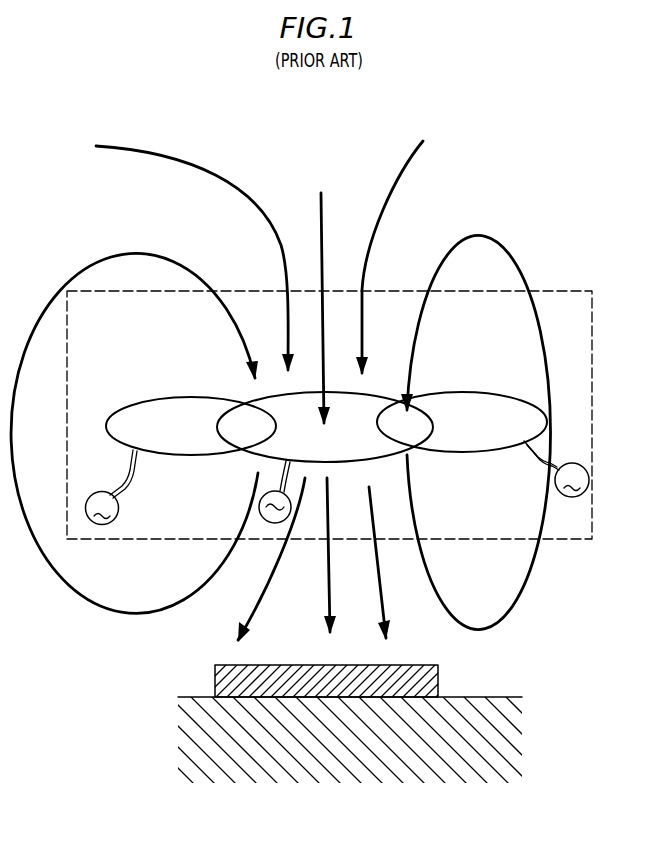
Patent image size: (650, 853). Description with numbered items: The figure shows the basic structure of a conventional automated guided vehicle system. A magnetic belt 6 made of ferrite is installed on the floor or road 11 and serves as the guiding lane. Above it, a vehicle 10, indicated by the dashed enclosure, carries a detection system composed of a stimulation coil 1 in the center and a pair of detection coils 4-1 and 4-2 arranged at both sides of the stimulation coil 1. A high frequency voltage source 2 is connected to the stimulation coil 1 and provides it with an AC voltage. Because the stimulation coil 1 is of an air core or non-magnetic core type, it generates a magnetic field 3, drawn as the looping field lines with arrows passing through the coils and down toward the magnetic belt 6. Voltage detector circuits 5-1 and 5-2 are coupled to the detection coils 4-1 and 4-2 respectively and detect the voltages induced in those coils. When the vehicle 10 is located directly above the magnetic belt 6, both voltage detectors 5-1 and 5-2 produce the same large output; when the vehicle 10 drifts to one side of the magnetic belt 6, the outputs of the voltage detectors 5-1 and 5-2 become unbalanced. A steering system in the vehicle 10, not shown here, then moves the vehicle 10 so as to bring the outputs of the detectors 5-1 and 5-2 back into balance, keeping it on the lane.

The stimulation coil 1 is at (377, 390).
The high frequency voltage source 2 is at (274, 523).
The magnetic field 3 is at (233, 178).
The detection coil 4-1 is at (125, 406).
The detection coil 4-2 is at (510, 397).
The voltage detector circuit 5-1 is at (102, 525).
The voltage detector circuit 5-2 is at (572, 497).
The magnetic belt 6 is at (421, 665).
The vehicle 10 is at (592, 303).
The floor or road 11 is at (473, 697).